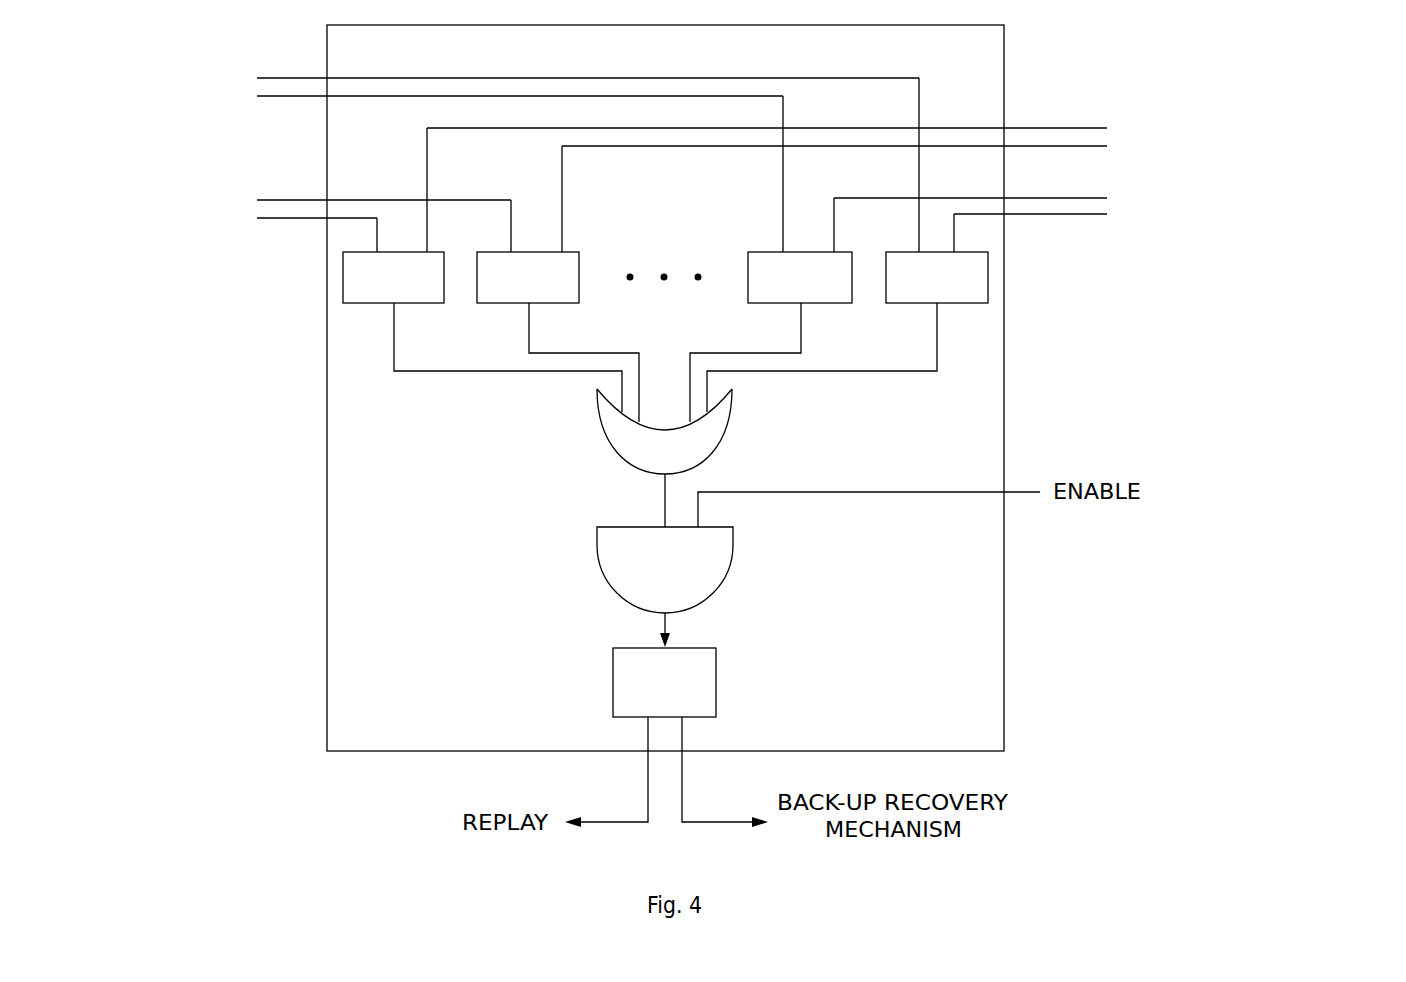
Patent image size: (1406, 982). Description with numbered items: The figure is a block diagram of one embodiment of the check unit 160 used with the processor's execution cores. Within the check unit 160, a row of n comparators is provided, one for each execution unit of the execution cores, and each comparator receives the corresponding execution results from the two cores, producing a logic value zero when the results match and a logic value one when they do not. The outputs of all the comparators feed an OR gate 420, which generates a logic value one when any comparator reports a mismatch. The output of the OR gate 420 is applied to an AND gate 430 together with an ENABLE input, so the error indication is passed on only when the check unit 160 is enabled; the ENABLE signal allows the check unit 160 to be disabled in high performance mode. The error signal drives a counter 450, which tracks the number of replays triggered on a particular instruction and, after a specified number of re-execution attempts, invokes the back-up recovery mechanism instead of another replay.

The check unit 160 is at (665, 388).
The OR gate 420 is at (664, 458).
The AND gate 430 is at (665, 587).
The counter 450 is at (666, 737).